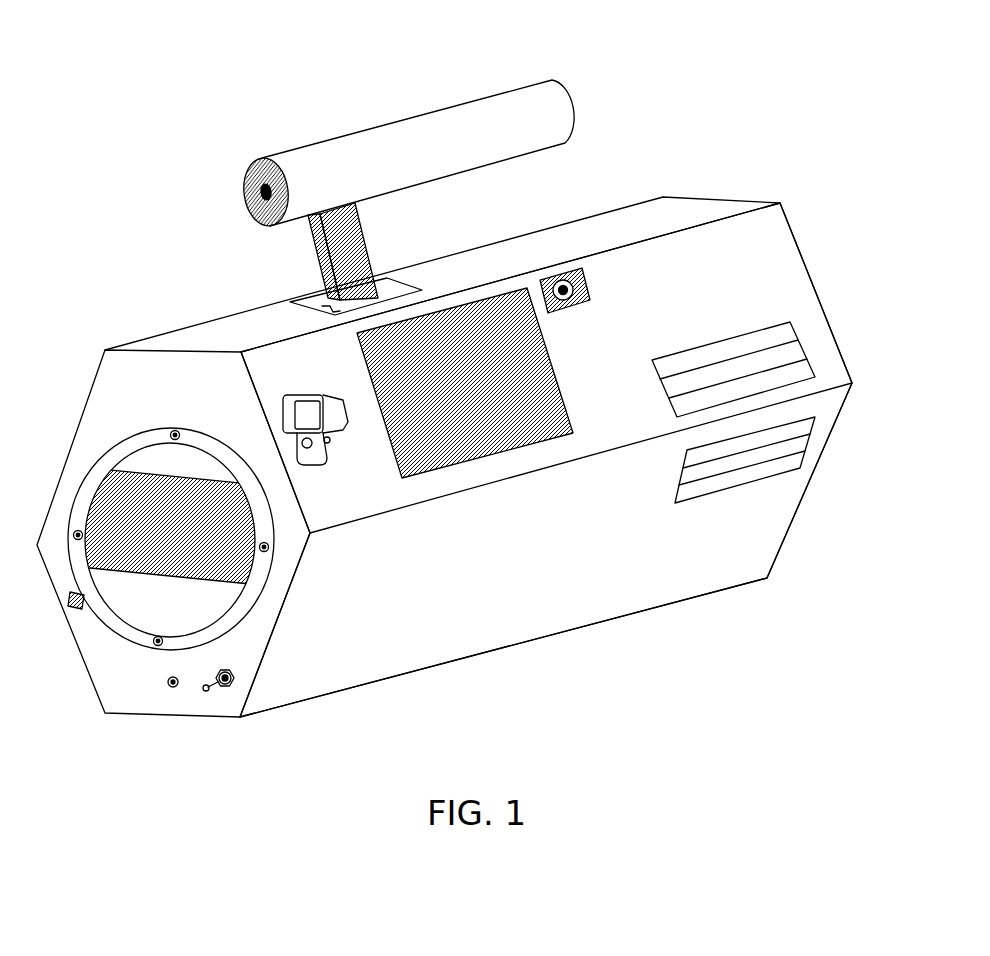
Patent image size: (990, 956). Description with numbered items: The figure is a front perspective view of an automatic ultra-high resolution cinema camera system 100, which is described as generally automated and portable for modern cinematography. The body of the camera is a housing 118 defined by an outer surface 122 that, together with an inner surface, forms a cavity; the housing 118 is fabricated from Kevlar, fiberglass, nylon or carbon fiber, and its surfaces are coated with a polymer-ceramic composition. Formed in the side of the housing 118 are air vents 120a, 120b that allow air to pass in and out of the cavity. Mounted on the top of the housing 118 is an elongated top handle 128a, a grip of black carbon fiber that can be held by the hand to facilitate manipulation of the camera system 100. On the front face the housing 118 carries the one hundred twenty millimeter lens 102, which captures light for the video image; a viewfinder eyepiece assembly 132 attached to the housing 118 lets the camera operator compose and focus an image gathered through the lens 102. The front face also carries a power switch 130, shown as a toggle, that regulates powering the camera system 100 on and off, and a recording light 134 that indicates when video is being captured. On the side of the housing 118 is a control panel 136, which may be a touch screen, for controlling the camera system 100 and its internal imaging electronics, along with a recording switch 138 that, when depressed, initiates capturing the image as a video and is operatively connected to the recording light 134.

The ultra-high resolution cinema camera system 100 is at (126, 126).
The 120 mm lens 102 is at (190, 471).
The housing 118 is at (812, 258).
The air vent 120a is at (800, 362).
The air vent 120b is at (783, 455).
The outer surface 122 is at (735, 271).
The top handle 128a is at (412, 133).
The power switch 130 is at (235, 679).
The viewfinder eyepiece assembly 132 is at (293, 395).
The recording light 134 is at (173, 690).
The control panel 136 is at (465, 383).
The recording switch 138 is at (556, 281).